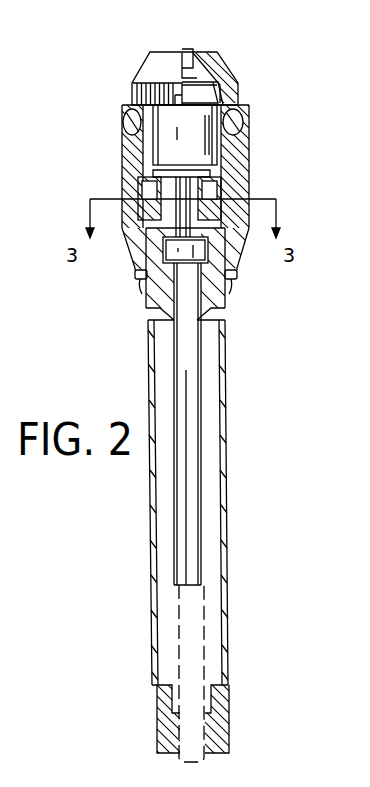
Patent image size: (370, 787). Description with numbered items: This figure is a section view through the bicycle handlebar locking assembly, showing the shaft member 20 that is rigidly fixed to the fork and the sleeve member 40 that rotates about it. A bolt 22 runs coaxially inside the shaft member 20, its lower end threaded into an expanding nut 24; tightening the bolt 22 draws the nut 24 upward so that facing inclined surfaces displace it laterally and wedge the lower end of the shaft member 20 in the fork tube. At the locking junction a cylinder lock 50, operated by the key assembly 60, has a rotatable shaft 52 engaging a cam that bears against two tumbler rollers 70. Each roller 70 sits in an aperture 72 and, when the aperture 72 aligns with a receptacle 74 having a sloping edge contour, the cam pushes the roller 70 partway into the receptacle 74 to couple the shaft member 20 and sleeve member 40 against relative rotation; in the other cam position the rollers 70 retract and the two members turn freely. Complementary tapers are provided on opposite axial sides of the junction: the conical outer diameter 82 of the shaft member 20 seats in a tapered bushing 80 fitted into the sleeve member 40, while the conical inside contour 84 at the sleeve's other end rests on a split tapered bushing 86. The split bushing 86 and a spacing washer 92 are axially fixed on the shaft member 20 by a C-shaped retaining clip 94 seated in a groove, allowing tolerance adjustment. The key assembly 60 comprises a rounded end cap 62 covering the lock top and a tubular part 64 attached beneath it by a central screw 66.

The shaft member 20 is at (228, 505).
The bolt 22 is at (190, 487).
The nut 24 is at (232, 750).
The sleeve member 40 is at (262, 186).
The cylinder lock 50 is at (135, 86).
The rotatable shaft 52 is at (140, 192).
The key assembly 60 is at (152, 62).
The rounded end cap 62 is at (242, 78).
The tubular part 64 is at (190, 75).
The central screw 66 is at (184, 49).
The tumbler roller 70 is at (236, 182).
The aperture 72 is at (150, 152).
The receptacle 74 is at (235, 152).
The tapered bushing 80 is at (234, 130).
The conical outer diameter 82 is at (150, 126).
The conical inside contour 84 is at (134, 277).
The split tapered bushing 86 is at (238, 277).
The spacing washer 92 is at (231, 290).
The retaining clip 94 is at (141, 290).